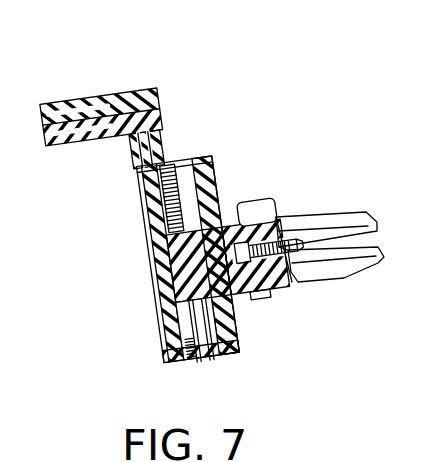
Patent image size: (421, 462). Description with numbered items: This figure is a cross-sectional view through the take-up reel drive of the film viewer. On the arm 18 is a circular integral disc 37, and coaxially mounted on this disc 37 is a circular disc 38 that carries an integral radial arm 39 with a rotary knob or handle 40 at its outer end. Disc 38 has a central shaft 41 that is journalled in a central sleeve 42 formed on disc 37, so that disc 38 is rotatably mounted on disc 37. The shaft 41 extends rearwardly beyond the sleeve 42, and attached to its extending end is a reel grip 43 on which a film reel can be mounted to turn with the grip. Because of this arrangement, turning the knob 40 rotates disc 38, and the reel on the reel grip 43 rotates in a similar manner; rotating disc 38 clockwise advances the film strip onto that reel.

The arm 18 is at (236, 352).
The circular integral disc 37 is at (207, 198).
The circular disc 38 is at (155, 226).
The radial arm 39 is at (140, 156).
The rotary knob 40 is at (83, 84).
The central shaft 41 is at (175, 279).
The central sleeve 42 is at (232, 214).
The reel grip 43 is at (327, 212).